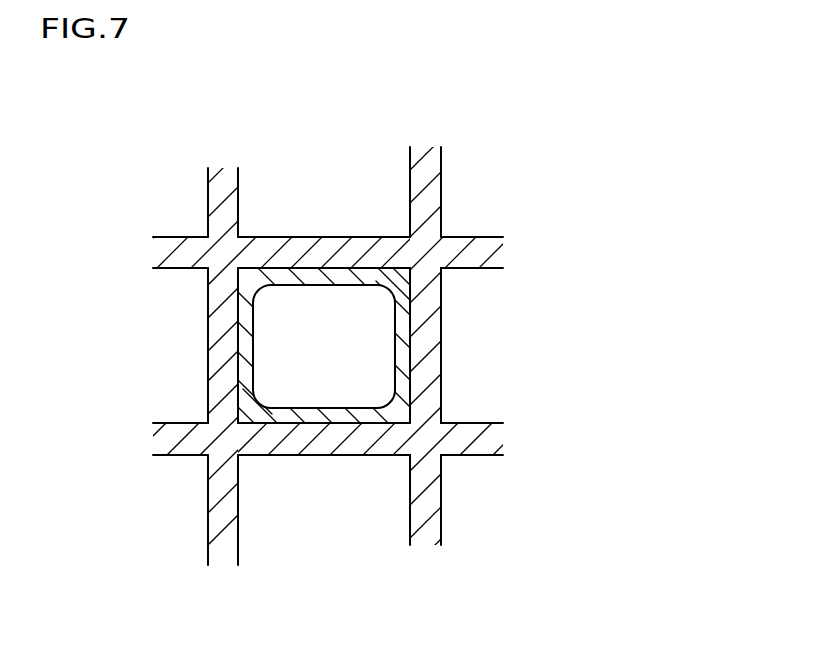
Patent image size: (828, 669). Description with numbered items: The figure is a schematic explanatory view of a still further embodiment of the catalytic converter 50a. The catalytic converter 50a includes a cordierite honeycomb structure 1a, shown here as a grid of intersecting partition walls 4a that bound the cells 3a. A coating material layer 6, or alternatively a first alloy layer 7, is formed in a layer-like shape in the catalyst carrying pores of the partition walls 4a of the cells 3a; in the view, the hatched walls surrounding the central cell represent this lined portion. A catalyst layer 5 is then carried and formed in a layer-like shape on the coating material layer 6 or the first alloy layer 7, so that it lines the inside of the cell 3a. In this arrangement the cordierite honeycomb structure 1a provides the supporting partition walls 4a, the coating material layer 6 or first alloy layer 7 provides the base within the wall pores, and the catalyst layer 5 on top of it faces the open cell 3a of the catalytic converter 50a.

The catalytic converter 50a is at (569, 137).
The cordierite honeycomb structure 1a is at (414, 334).
The partition walls 4a is at (303, 245).
The coating material layer 6 is at (414, 334).
The first alloy layer 7 is at (414, 334).
The catalyst layer 5 is at (262, 405).
The cells 3a is at (346, 342).